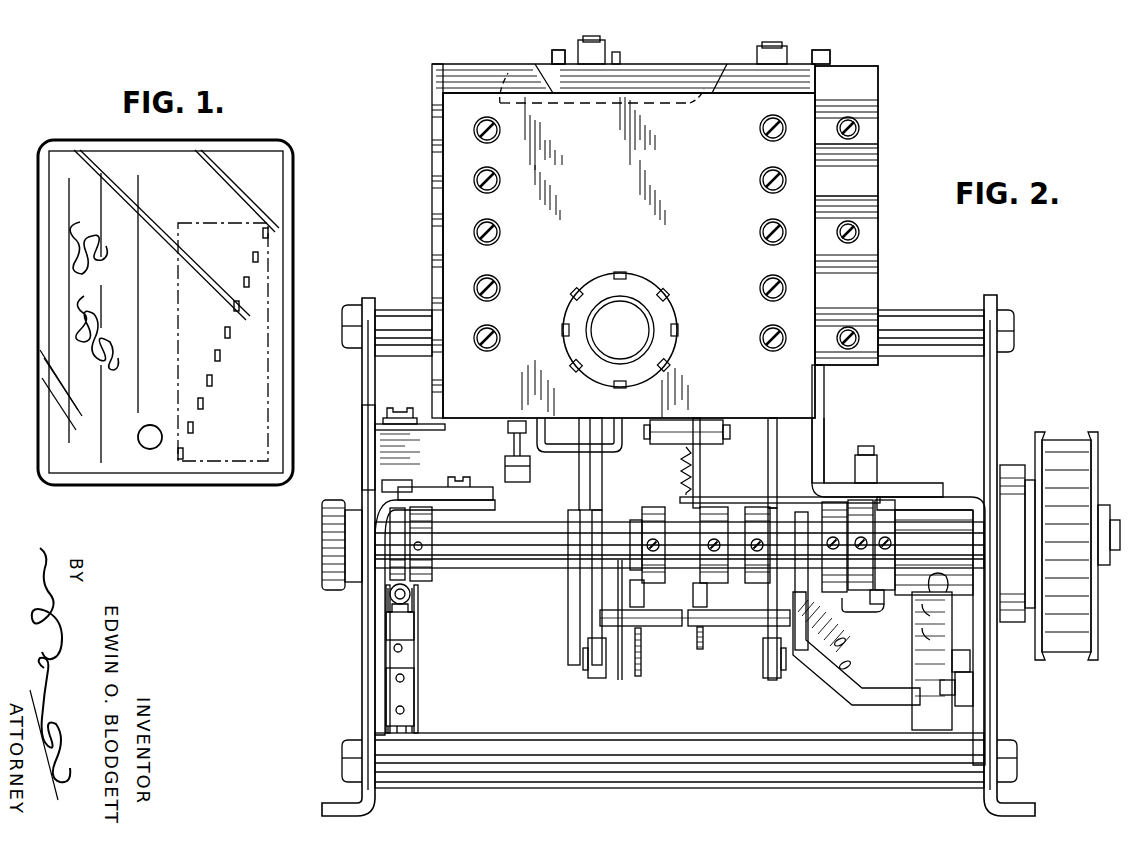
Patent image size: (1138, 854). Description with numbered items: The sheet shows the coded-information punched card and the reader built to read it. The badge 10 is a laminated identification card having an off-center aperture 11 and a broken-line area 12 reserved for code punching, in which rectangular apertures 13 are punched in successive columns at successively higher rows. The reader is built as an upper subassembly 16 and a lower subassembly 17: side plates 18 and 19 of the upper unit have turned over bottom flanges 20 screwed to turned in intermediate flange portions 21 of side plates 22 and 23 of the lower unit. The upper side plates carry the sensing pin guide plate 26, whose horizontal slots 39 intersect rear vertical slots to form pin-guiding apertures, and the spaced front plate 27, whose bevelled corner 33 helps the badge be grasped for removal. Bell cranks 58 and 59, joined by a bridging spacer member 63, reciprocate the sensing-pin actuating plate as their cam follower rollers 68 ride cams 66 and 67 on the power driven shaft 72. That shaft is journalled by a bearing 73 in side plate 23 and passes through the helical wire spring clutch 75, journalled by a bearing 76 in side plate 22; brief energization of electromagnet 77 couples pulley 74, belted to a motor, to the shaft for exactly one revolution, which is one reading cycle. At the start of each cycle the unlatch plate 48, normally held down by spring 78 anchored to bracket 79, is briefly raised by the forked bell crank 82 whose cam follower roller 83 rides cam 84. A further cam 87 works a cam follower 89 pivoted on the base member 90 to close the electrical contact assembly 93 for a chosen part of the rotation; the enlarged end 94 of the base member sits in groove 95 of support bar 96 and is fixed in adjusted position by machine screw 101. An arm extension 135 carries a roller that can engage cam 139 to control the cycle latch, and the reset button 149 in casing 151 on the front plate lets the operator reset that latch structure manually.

In FIG. 1, the badge 10 is at (290, 190).
In FIG. 1, the off-center aperture 11 is at (148, 448).
In FIG. 1, the area 12 is at (268, 280).
In FIG. 1, the rectangular apertures 13 is at (222, 342).
In FIG. 2, the upper subassembly 16 is at (885, 240).
In FIG. 2, the subassembly 17 is at (1018, 708).
In FIG. 2, the side plate 18 is at (824, 48).
In FIG. 2, the side plate 19 is at (552, 48).
In FIG. 2, the turned over bottom flanges 20 is at (483, 494).
In FIG. 2, the turned in intermediate flange portions 21 is at (495, 508).
In FIG. 2, the side plate 22 is at (997, 375).
In FIG. 2, the side plate 23 is at (362, 388).
In FIG. 2, the sensing pin guide plate 26 is at (432, 178).
In FIG. 2, the front plate 27 is at (456, 134).
In FIG. 2, the bevelled corner 33 is at (668, 98).
In FIG. 2, the horizontal slots 39 is at (878, 196).
In FIG. 2, the unlatch plate 48 is at (690, 427).
In FIG. 2, the bell crank 58 is at (768, 432).
In FIG. 2, the bell crank 59 is at (578, 488).
In FIG. 2, the bridging spacer member 63 is at (660, 622).
In FIG. 2, the cam 66 is at (768, 600).
In FIG. 2, the cam 67 is at (578, 600).
In FIG. 2, the cam follower rollers 68 is at (598, 678).
In FIG. 2, the shaft 72 is at (498, 552).
In FIG. 2, the bearing 73 is at (396, 580).
In FIG. 2, the pulley 74 is at (1065, 442).
In FIG. 2, the helical wire spring clutch 75 is at (875, 665).
In FIG. 2, the bearing 76 is at (1012, 465).
In FIG. 2, the electromagnet 77 is at (912, 630).
In FIG. 2, the spring 78 is at (676, 455).
In FIG. 2, the bracket 79 is at (745, 497).
In FIG. 2, the forked bell crank 82 is at (644, 597).
In FIG. 2, the cam follower roller 83 is at (707, 597).
In FIG. 2, the cam 84 is at (703, 645).
In FIG. 2, the cam 87 is at (400, 540).
In FIG. 2, the cam follower 89 is at (412, 612).
In FIG. 2, the sub-assembly base member 90 is at (403, 640).
In FIG. 2, the electrical contact assembly 93 is at (408, 690).
In FIG. 2, the enlarged end 94 is at (395, 480).
In FIG. 2, the groove 95 is at (375, 480).
In FIG. 2, the support bar 96 is at (385, 440).
In FIG. 2, the machine screw 101 is at (405, 406).
In FIG. 2, the arm extension 135 is at (620, 640).
In FIG. 2, the cam 139 is at (641, 668).
In FIG. 2, the reset button 149 is at (620, 312).
In FIG. 2, the casing 151 is at (668, 290).